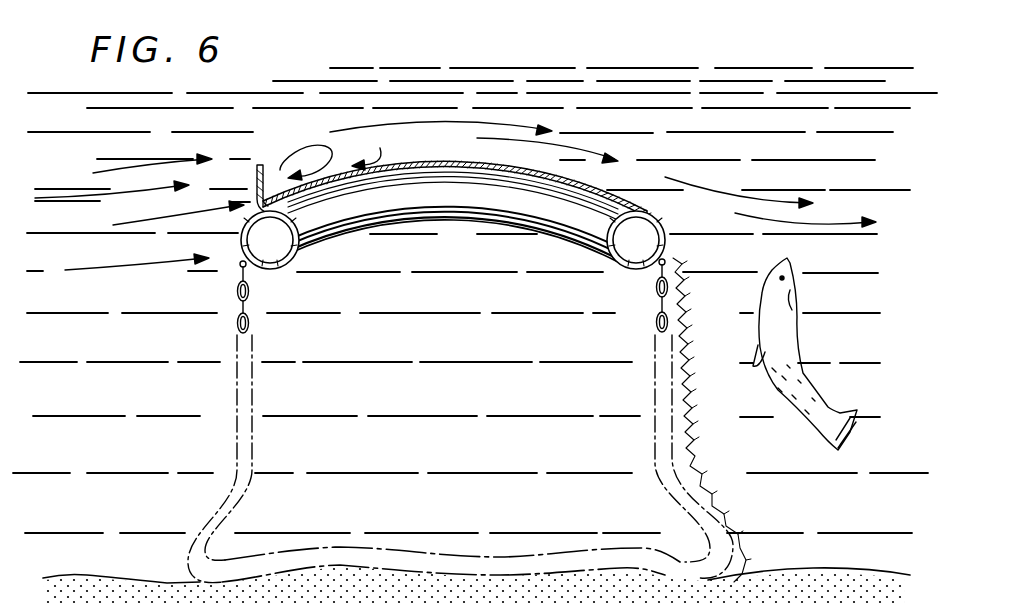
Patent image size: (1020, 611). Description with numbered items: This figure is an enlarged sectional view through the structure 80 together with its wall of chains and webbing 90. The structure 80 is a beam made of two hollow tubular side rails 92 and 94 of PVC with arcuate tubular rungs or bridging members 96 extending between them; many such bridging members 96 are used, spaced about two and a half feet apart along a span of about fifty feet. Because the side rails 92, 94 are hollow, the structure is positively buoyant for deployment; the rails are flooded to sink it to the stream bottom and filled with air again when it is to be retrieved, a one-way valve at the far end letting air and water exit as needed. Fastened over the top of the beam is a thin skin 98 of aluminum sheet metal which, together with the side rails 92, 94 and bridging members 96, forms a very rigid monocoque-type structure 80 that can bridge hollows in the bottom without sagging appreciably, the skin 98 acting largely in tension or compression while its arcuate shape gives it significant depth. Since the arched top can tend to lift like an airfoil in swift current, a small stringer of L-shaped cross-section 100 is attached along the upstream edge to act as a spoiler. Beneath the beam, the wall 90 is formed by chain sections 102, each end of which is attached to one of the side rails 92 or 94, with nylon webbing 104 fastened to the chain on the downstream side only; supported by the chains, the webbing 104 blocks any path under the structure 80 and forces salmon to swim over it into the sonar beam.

The structure 80 is at (468, 162).
The thin skin 98 is at (412, 168).
The bridging members 96 is at (440, 192).
The stringer of L shaped cross-section 100 is at (262, 166).
The side rail 92 is at (279, 270).
The side rail 94 is at (619, 270).
The chain section 102 is at (650, 289).
The wall of chains and webbing 90 is at (690, 330).
The nylon webbing 104 is at (688, 437).